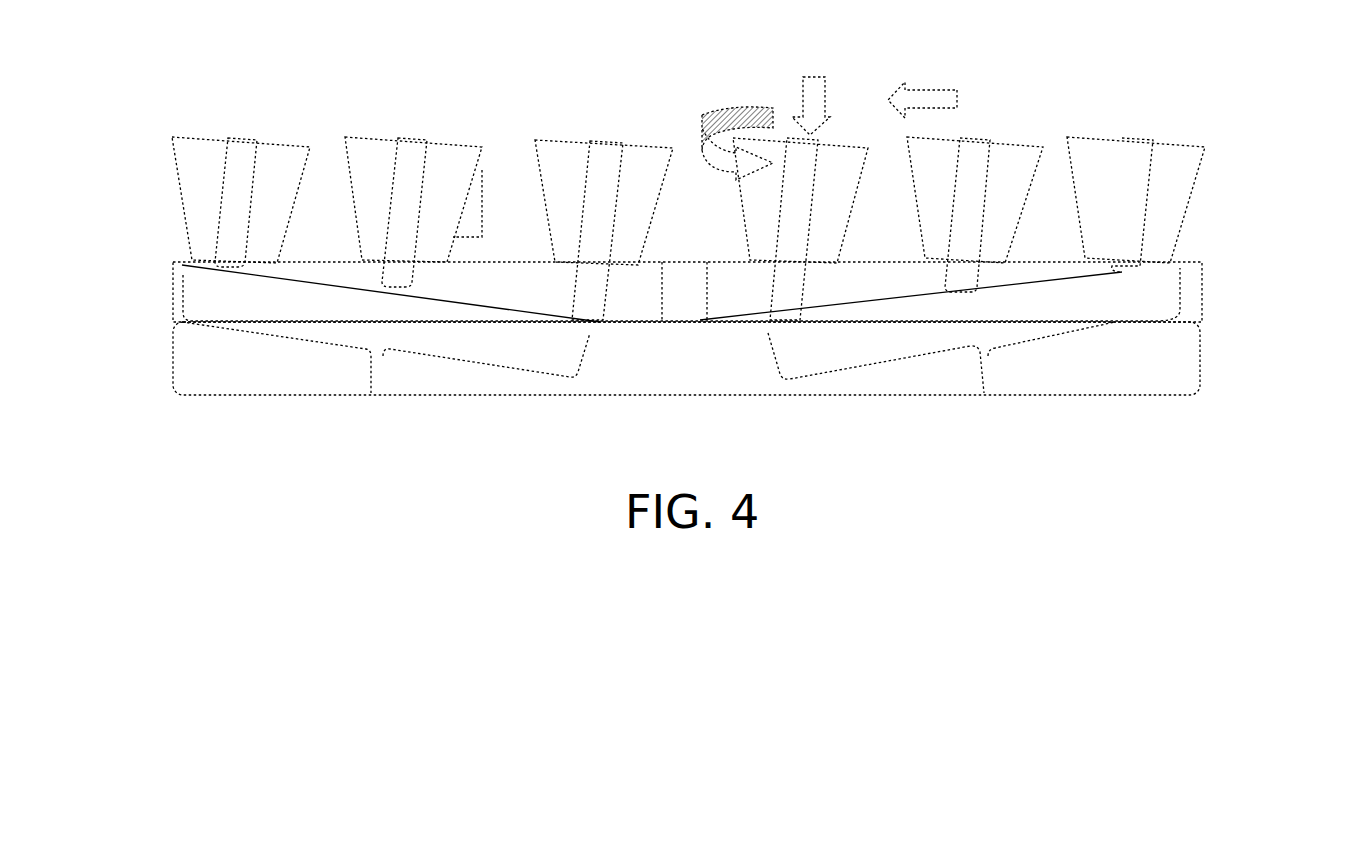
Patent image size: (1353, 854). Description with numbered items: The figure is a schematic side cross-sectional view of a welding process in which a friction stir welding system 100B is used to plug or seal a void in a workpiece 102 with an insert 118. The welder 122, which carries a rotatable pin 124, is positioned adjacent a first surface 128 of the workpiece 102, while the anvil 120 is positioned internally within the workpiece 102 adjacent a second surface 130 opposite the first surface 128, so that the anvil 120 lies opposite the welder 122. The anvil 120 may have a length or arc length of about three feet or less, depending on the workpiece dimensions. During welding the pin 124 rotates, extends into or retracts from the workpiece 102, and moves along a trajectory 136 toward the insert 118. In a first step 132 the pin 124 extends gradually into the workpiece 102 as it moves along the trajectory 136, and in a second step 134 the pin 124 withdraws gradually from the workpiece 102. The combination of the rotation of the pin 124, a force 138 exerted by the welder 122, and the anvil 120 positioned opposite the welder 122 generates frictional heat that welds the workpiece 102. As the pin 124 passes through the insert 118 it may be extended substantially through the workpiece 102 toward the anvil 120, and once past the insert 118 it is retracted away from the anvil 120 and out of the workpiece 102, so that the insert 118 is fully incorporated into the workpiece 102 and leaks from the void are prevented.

The friction stir welding system 100B is at (1218, 114).
The workpiece 102 is at (173, 298).
The insert 118 is at (707, 302).
The anvil 120 is at (180, 397).
The welder 122 is at (650, 143).
The pin 124 is at (585, 177).
The first surface 128 is at (185, 260).
The second surface 130 is at (318, 323).
The first step 132 is at (941, 378).
The second step 134 is at (472, 380).
The trajectory 136 is at (938, 88).
The force 138 is at (800, 90).